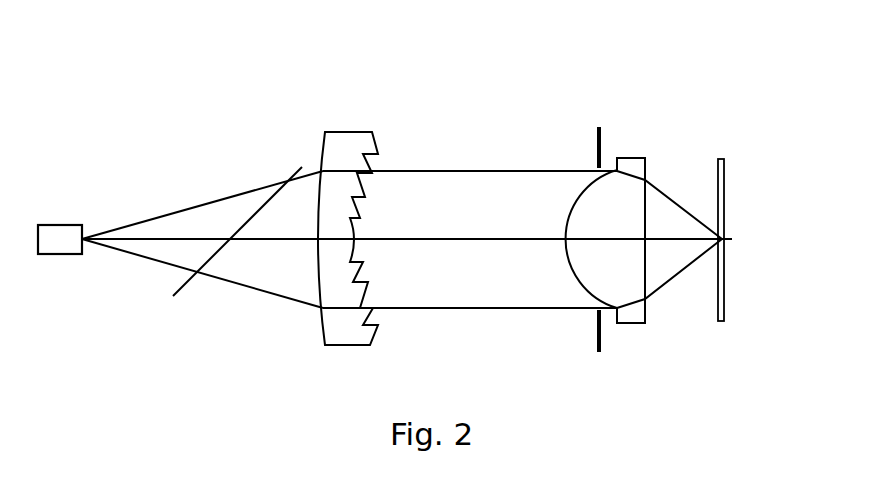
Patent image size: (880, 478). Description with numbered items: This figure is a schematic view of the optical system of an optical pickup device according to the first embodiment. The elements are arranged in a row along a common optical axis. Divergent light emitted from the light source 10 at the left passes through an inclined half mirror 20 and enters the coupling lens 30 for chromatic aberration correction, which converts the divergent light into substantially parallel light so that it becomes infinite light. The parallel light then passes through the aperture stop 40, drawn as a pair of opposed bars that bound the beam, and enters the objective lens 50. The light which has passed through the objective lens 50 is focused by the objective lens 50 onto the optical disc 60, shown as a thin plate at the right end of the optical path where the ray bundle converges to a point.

The light source 10 is at (55, 230).
The half mirror 20 is at (177, 296).
The coupling lens for chromatic aberration correction 30 is at (366, 142).
The aperture stop 40 is at (599, 127).
The objective lens 50 is at (640, 159).
The optical disc 60 is at (725, 170).